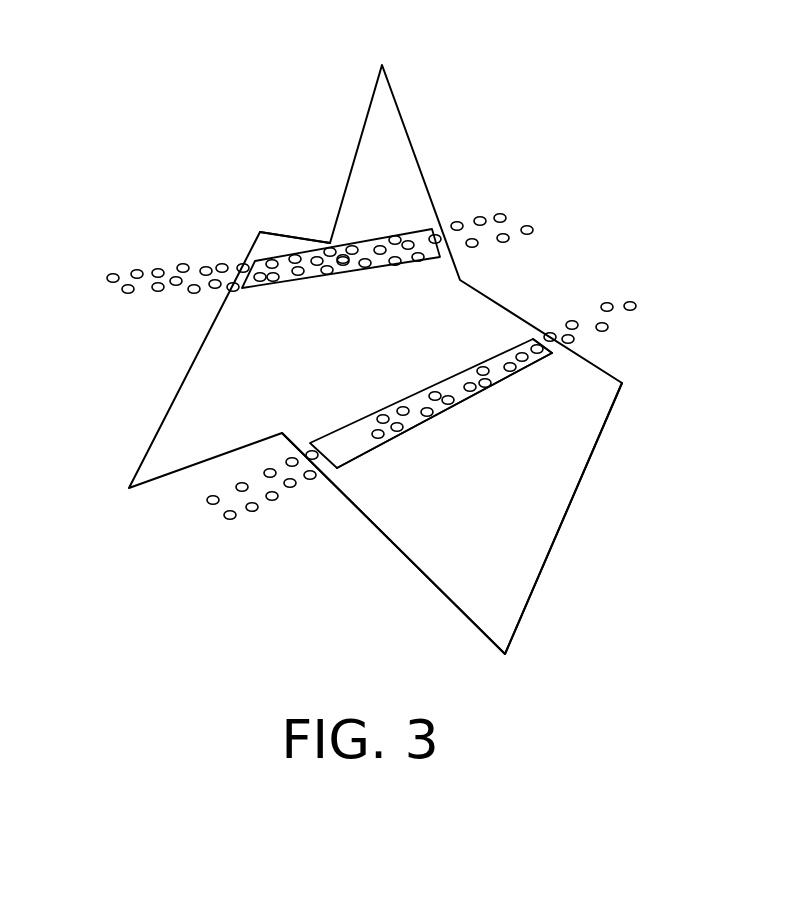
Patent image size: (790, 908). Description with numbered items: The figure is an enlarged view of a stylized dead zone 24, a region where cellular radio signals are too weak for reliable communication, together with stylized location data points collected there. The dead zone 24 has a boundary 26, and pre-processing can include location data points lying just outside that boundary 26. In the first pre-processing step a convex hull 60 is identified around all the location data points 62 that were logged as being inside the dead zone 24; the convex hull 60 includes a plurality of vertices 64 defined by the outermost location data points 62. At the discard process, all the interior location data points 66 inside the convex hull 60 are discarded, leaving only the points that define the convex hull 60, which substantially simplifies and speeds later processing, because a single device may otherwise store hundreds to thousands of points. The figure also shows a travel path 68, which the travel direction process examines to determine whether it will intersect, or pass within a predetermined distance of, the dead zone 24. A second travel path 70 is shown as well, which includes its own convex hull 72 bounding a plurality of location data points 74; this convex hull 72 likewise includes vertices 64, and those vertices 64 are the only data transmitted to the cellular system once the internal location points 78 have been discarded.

The dead zone 24 is at (172, 116).
The boundary 26 is at (531, 600).
The convex hull 60 is at (412, 422).
The location data points 62 is at (338, 414).
The vertices 64 is at (547, 355).
The interior location data points 66 is at (427, 412).
The travel path 68 is at (613, 282).
The travel path 70 is at (156, 253).
The convex hull 72 is at (278, 254).
The location data points 74 is at (324, 236).
The internal location points 78 is at (380, 250).